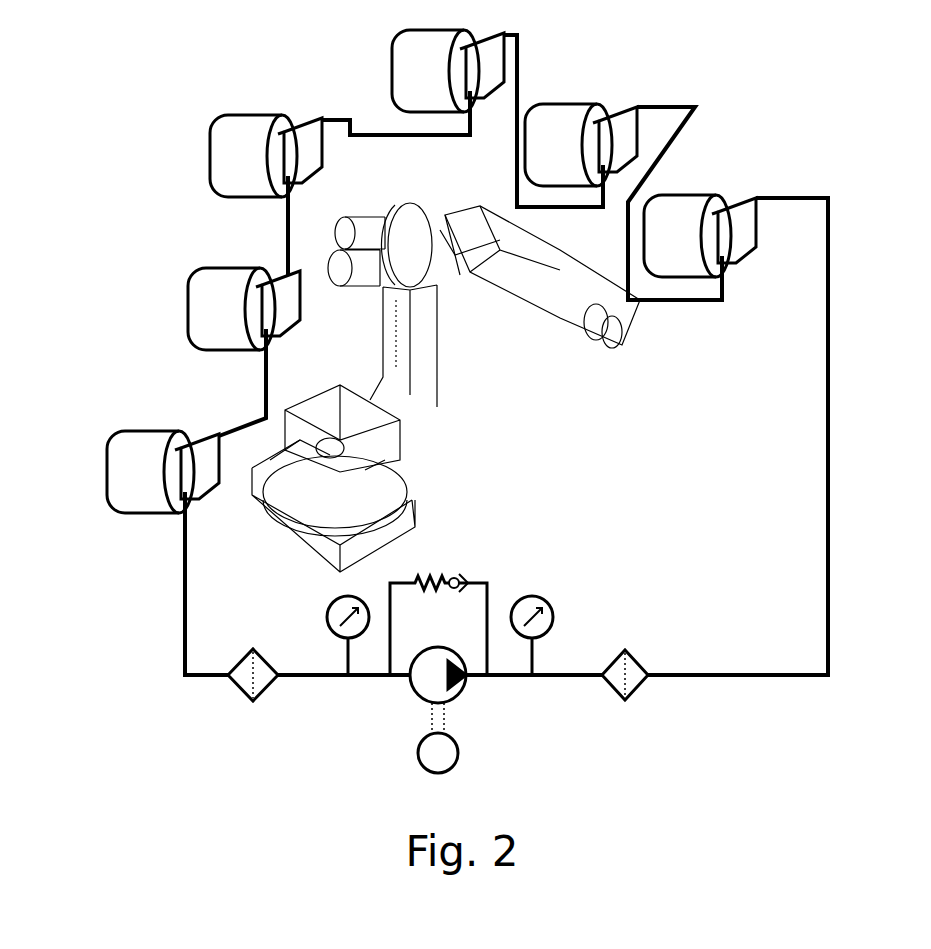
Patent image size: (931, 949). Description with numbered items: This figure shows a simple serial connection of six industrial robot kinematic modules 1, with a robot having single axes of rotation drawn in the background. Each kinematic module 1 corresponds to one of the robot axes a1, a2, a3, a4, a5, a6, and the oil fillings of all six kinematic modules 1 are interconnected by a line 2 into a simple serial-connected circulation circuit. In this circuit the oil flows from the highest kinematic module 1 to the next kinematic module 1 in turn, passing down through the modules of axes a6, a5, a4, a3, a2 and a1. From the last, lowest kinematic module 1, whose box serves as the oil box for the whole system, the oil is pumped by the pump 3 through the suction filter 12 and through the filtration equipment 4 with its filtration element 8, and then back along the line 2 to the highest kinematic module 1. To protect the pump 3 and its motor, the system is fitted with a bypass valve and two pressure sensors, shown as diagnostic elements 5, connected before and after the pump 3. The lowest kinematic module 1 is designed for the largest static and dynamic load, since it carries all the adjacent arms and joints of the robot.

The kinematic module 1 is at (413, 256).
The axis 1 a1 is at (145, 472).
The axis 2 a2 is at (220, 309).
The axis 3 a3 is at (243, 156).
The axis 4 a4 is at (448, 56).
The axis 5 a5 is at (581, 130).
The axis 6 a6 is at (700, 221).
The line 2 is at (340, 118).
The pump 3 is at (458, 703).
The filtration equipment 4 is at (622, 700).
The diagnostic element 5 is at (535, 595).
The filtration element 8 is at (639, 678).
The suction filter 12 is at (247, 703).